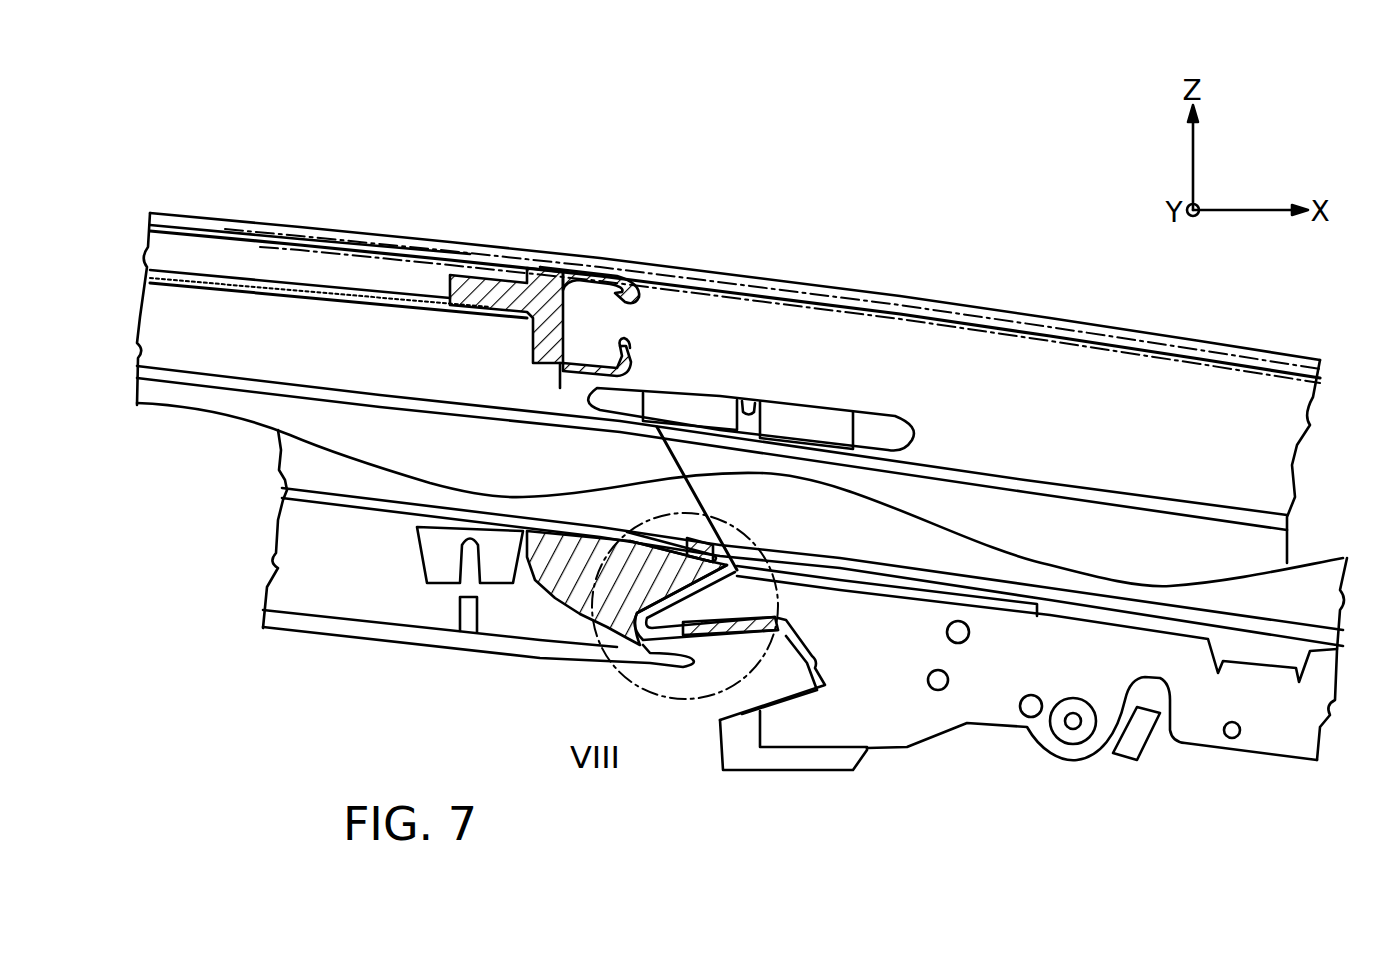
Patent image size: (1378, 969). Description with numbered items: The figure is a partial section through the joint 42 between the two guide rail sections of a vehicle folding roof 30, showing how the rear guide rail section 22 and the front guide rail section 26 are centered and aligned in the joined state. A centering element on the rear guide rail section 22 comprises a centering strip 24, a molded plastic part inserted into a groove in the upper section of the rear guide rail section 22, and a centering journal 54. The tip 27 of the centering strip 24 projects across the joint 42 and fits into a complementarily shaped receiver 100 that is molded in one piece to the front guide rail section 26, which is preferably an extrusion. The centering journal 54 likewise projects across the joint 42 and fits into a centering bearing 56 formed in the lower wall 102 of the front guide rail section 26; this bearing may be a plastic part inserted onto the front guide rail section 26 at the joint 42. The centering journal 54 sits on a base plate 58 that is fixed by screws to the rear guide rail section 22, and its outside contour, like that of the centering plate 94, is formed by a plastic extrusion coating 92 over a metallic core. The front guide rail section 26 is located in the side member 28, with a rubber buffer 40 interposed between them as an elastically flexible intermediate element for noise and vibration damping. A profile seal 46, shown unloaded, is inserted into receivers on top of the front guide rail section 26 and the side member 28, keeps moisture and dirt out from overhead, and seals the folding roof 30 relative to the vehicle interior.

The rear guide rail section 22 is at (950, 582).
The centering strip 24 is at (770, 396).
The front guide rail section 26 is at (383, 402).
The tip 27 is at (631, 398).
The side member 28 is at (505, 645).
The folding roof 30 is at (368, 232).
The rubber buffer 40 is at (440, 560).
The joint 42 is at (747, 500).
The profile seal 46 is at (531, 270).
The centering journal 54 is at (680, 614).
The centering bearing 56 is at (570, 573).
The base plate 58 is at (1000, 680).
The plastic extrusion coating 92 is at (747, 757).
The centering plate 94 is at (810, 723).
The receiver 100 is at (577, 370).
The lower wall 102 is at (347, 503).